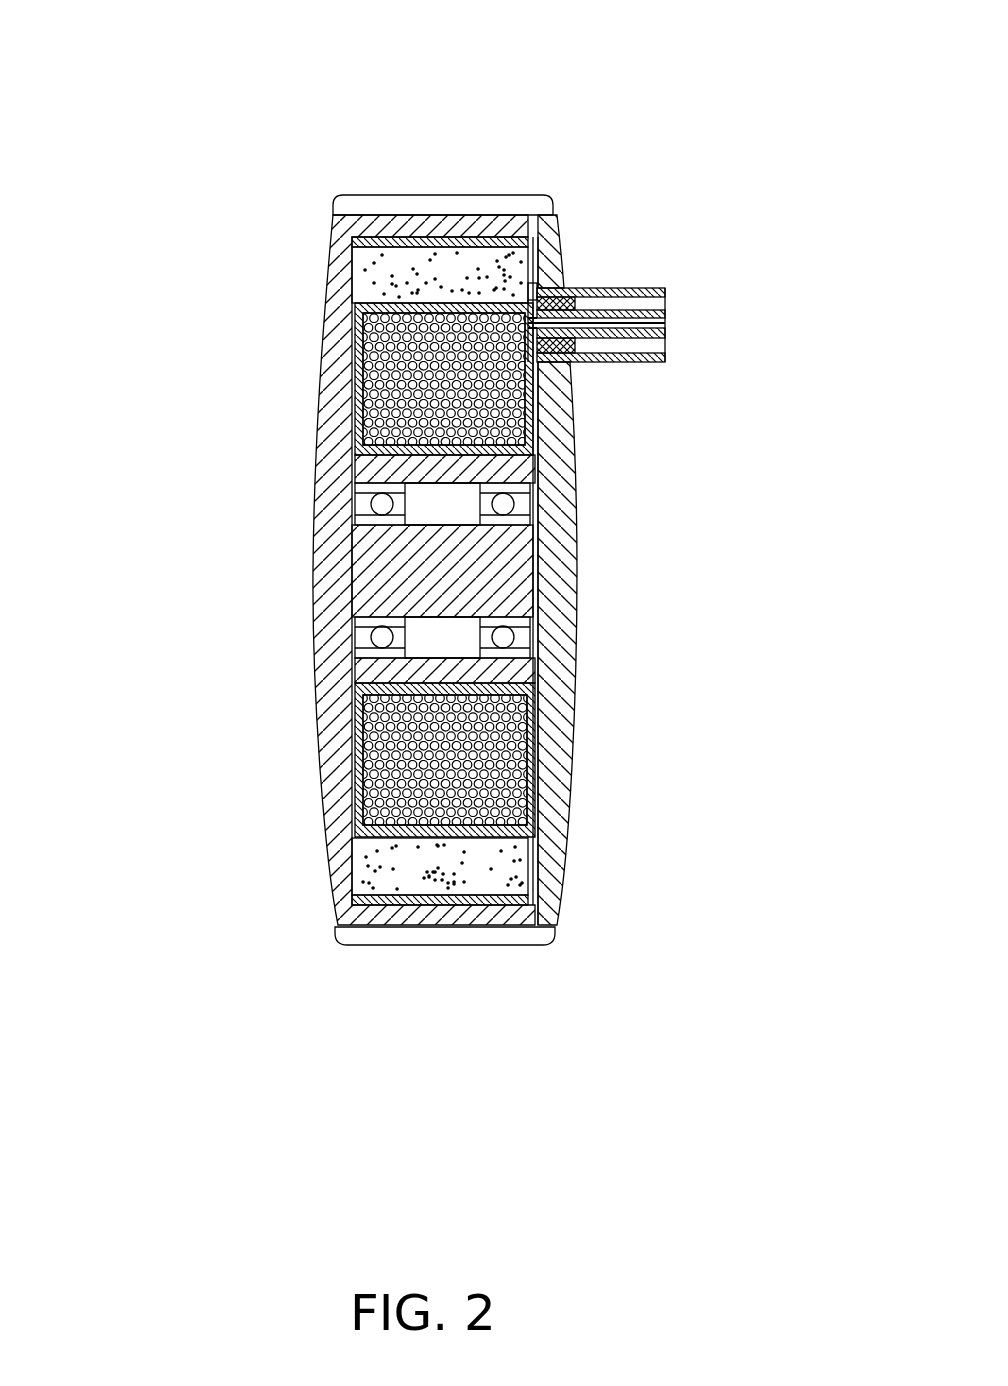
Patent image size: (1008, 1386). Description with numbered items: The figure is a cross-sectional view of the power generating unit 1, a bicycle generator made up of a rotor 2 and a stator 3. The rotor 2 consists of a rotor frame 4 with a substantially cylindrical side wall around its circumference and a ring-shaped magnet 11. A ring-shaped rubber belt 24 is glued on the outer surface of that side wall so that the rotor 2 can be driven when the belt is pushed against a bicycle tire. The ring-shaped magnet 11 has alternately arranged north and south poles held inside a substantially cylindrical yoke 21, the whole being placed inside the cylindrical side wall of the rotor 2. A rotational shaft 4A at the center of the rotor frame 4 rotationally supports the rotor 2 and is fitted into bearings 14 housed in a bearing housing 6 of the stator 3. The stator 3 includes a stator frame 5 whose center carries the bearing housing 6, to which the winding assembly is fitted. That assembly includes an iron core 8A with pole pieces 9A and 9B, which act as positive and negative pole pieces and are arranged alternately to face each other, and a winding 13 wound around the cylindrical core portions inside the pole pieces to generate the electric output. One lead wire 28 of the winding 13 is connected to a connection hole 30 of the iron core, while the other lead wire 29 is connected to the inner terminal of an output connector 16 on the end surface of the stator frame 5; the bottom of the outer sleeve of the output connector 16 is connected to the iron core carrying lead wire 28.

The power generating unit 1 is at (468, 132).
The rotor 2 is at (374, 192).
The stator 3 is at (578, 560).
The rotor frame 4 is at (323, 423).
The rotational shaft 4A is at (410, 575).
The stator frame 5 is at (557, 680).
The bearing housing 6 is at (400, 668).
The iron core 8A is at (360, 742).
The pole pieces 9A is at (412, 303).
The pole pieces 9B is at (333, 927).
The ring-shaped magnet 11 is at (513, 870).
The winding 13 is at (540, 743).
The bearings 14 is at (503, 635).
The output connector 16 is at (603, 317).
The yoke 21 is at (497, 900).
The ring-shaped rubber belt 24 is at (465, 202).
The lead wire 28 is at (530, 432).
The lead wire 29 is at (663, 290).
The connection hole 30 is at (530, 452).